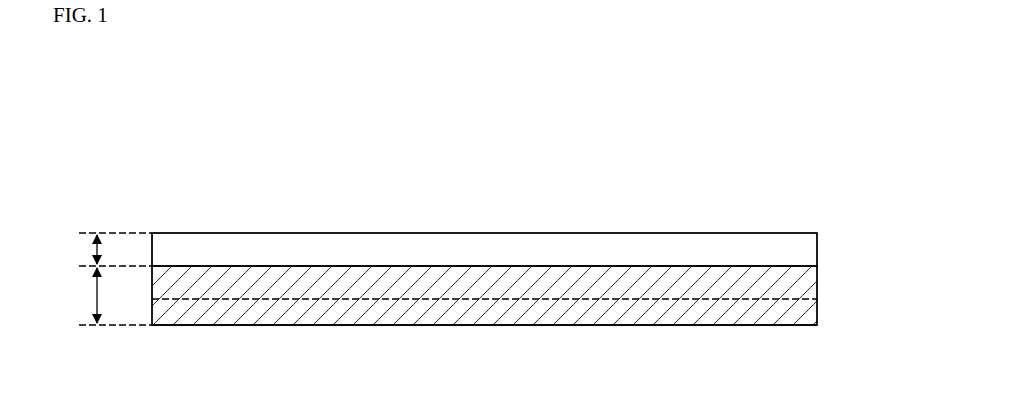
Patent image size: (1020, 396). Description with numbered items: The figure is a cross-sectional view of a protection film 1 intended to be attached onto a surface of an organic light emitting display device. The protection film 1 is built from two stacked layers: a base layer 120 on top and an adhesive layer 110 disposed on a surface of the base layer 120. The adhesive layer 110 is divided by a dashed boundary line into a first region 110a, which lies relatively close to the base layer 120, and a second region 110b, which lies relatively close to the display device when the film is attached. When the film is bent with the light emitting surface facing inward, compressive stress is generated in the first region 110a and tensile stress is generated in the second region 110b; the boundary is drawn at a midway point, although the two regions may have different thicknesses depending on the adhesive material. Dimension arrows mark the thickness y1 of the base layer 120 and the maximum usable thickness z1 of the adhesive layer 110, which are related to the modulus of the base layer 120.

The laminate / sheet assembly 1 is at (674, 146).
The base layer 120 is at (808, 248).
The adhesive layer 110 is at (897, 283).
The first region 110a is at (808, 281).
The second region 110b is at (808, 313).
The thickness of the base layer y1 is at (110, 249).
The maximum usable thickness of the adhesive layer z1 is at (110, 296).